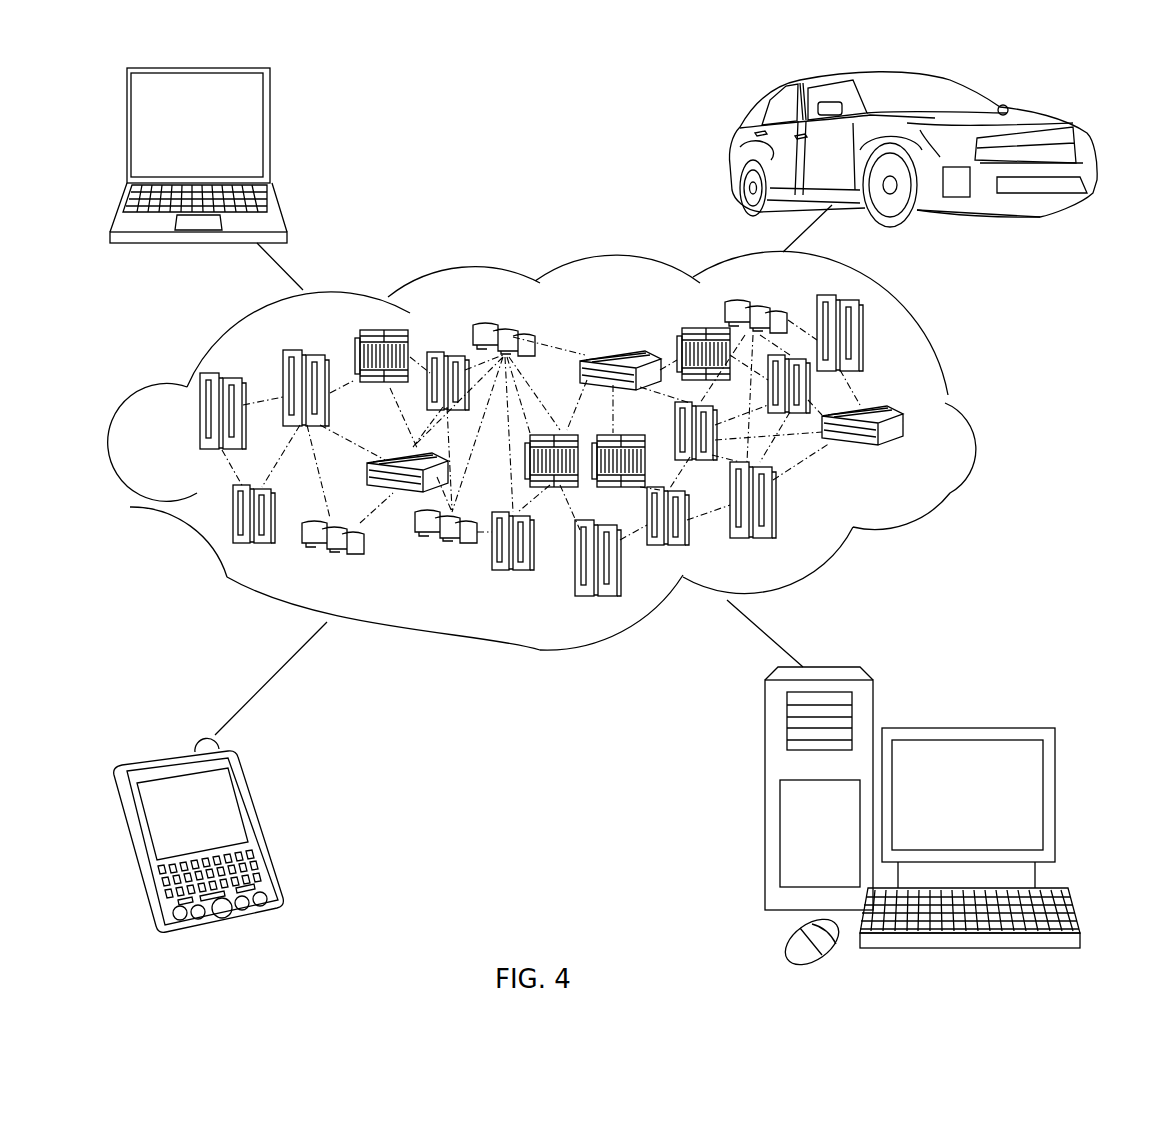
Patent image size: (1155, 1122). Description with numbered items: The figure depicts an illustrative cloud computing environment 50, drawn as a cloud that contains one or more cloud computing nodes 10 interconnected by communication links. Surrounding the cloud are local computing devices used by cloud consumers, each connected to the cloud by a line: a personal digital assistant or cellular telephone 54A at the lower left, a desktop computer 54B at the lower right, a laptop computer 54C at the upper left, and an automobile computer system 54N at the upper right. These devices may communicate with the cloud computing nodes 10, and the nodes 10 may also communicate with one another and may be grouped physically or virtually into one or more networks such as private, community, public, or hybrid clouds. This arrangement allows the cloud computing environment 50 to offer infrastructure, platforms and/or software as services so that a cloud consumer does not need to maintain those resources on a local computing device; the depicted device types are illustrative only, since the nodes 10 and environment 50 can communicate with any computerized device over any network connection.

The cloud computing environment 50 is at (958, 432).
The cloud computing node 10 is at (903, 457).
The personal digital assistant or cellular telephone 54A is at (260, 830).
The desktop computer 54B is at (963, 728).
The laptop computer 54C is at (270, 133).
The automobile computer system 54N is at (733, 152).